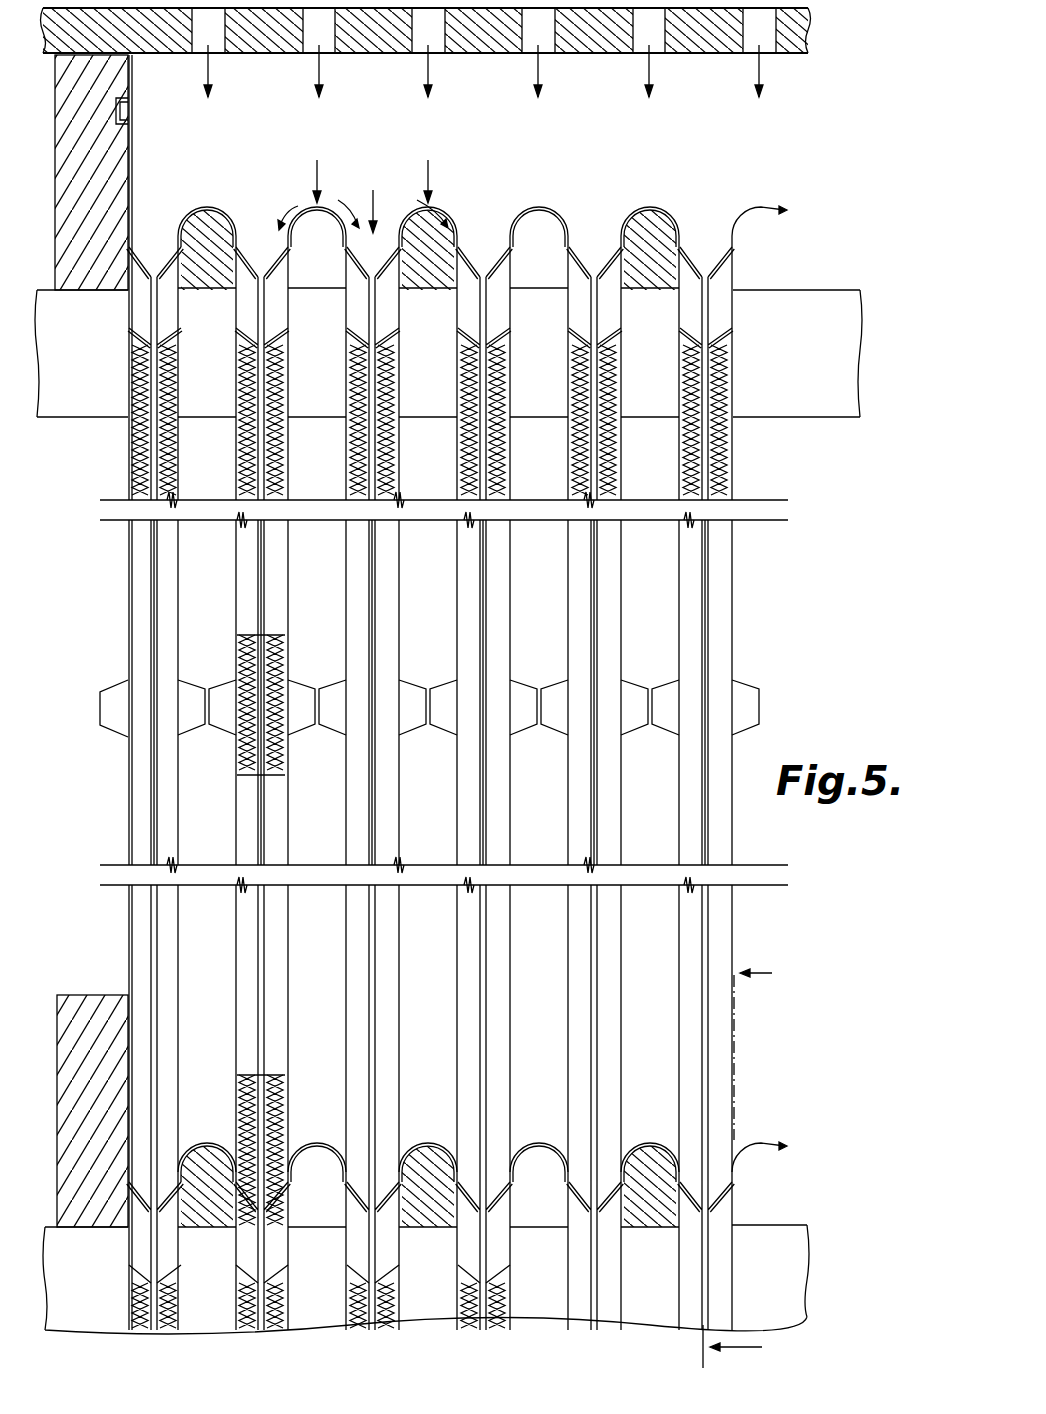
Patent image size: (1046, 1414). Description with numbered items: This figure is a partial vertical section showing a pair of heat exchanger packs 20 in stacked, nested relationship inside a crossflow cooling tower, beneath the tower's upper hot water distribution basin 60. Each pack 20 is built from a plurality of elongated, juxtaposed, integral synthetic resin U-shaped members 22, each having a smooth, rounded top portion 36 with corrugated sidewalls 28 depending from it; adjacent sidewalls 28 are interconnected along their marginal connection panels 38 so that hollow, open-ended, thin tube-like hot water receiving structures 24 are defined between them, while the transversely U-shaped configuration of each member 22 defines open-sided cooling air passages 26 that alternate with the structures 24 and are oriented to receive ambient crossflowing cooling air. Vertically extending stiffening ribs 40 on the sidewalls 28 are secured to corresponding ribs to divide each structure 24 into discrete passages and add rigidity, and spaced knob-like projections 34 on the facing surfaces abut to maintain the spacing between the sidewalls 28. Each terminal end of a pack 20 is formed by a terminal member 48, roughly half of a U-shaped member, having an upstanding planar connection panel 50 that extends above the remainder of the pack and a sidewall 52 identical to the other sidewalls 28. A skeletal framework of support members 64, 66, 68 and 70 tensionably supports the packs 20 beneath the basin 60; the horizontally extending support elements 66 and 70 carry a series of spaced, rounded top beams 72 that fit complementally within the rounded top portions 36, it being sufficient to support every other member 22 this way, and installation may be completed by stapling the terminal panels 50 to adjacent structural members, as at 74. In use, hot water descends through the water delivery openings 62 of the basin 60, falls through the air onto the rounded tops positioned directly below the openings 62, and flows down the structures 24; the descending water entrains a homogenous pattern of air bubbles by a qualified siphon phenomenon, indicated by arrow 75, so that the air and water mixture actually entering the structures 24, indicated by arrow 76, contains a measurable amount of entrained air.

The heat exchanger pack 20 is at (775, 172).
The U-shaped member 22 is at (660, 203).
The hot water receiving structure 24 is at (484, 275).
The cooling air passage 26 is at (428, 757).
The sidewall 28 is at (458, 462).
The knob-like projection 34 is at (206, 690).
The rounded top portion 36 is at (195, 203).
The connection panel 38 is at (698, 584).
The stiffening rib 40 is at (360, 478).
The terminal member 48 is at (128, 550).
The upstanding connection panel 50 is at (133, 168).
The terminal member sidewall 52 is at (131, 468).
The hot water distribution basin 60 is at (810, 25).
The water delivery opening 62 is at (560, 45).
The support member 64 is at (92, 268).
The horizontally extending support element 66 is at (70, 400).
The support member 68 is at (83, 995).
The horizontally extending support element 70 is at (82, 1325).
The rounded top beam 72 is at (222, 225).
The staple 74 is at (133, 112).
The air entrainment arrow 75 is at (380, 207).
The air and water mixture arrow 76 is at (340, 205).